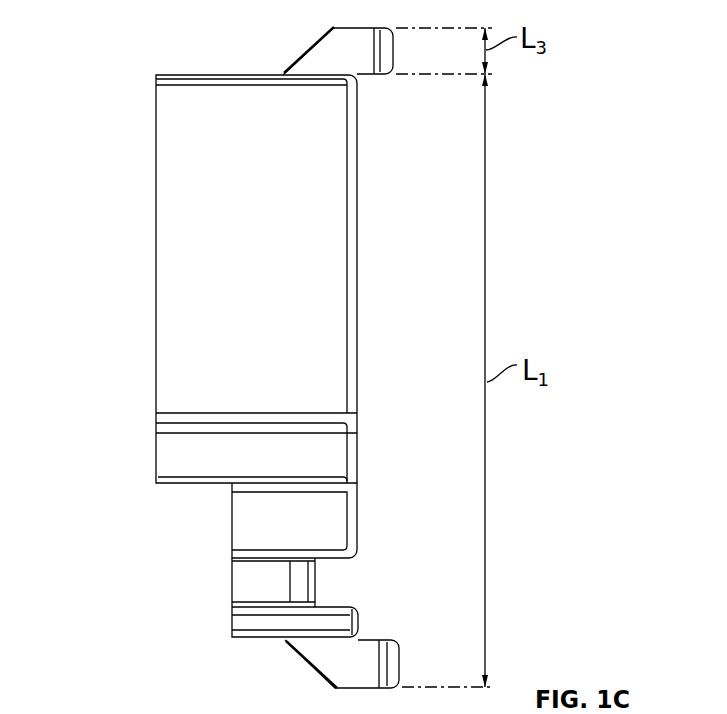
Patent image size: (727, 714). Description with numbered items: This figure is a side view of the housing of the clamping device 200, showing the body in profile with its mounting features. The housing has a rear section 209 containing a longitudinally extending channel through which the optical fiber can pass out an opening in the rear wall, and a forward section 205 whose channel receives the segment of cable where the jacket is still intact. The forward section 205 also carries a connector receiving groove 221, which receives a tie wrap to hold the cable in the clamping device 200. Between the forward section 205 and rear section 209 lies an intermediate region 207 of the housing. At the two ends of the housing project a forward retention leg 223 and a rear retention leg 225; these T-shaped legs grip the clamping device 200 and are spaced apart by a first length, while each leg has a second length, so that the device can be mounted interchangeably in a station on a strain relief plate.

The clamping device 200 is at (118, 57).
The forward section 205 is at (217, 550).
The band portion of housing 207 is at (365, 453).
The rear section 209 is at (363, 222).
The connector receiving groove 221 is at (325, 587).
The forward retention leg 223 is at (400, 667).
The rear retention leg 225 is at (365, 27).